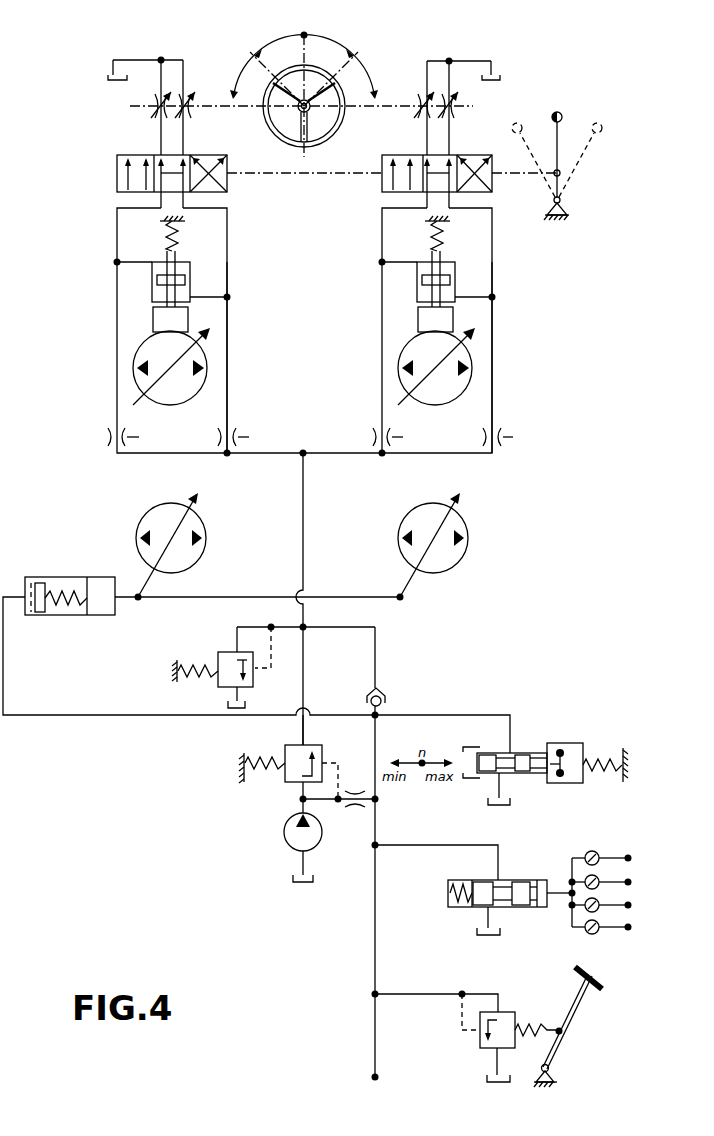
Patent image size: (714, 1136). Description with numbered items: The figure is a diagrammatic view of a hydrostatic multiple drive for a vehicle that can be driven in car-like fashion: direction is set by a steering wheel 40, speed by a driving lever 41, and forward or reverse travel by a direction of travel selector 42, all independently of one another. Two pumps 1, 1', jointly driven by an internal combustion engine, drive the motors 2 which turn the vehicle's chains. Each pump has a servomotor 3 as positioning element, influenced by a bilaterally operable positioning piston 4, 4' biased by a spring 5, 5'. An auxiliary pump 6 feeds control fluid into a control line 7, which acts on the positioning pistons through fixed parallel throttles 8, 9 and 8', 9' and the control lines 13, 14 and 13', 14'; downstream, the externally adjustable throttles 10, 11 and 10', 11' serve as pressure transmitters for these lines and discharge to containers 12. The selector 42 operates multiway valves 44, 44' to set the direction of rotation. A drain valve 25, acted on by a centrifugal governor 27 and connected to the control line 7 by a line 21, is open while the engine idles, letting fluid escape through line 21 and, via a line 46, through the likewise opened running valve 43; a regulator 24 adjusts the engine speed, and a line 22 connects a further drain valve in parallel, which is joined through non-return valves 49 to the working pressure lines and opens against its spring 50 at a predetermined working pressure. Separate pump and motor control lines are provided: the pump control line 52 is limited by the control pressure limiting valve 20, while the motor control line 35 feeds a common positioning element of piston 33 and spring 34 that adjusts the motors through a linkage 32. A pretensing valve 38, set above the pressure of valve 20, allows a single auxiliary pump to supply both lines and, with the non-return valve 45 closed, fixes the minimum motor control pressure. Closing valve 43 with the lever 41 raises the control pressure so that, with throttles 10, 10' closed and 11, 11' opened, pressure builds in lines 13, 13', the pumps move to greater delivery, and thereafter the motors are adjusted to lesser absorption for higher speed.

The pump 1 is at (137, 372).
The pump 1' is at (466, 366).
The motor 2 is at (152, 519).
The servomotor 3 is at (152, 323).
The positioning piston 4 is at (150, 282).
The positioning piston 4' is at (456, 279).
The spring 5 is at (126, 244).
The spring 5' is at (479, 240).
The auxiliary pump 6 is at (298, 838).
The control line 7 is at (303, 732).
The throttle 8 is at (131, 440).
The throttle 8' is at (398, 440).
The throttle 9 is at (241, 440).
The throttle 9' is at (508, 440).
The adjustable throttle 10 is at (204, 80).
The adjustable throttle 10' is at (389, 82).
The adjustable throttle 11 is at (210, 101).
The adjustable throttle 11' is at (432, 105).
The container 12 is at (306, 492).
The control line 13 is at (145, 330).
The control line 13' is at (412, 330).
The control line 14 is at (249, 357).
The control line 14' is at (516, 357).
The control pressure limiting valve 20 is at (222, 683).
The line 21 is at (440, 713).
The line 22 is at (417, 845).
The regulator 24 is at (577, 748).
The drain valve 25 is at (523, 753).
The centrifugal governor 27 is at (560, 748).
The linkage 32 is at (233, 597).
The piston 33 is at (37, 577).
The spring 34 is at (65, 590).
The motor control line 35 is at (70, 717).
The pretensing valve 38 is at (292, 772).
The steering wheel 40 is at (332, 82).
The driving lever 41 is at (567, 1025).
The direction of travel selector 42 is at (558, 111).
The running valve 43 is at (492, 1043).
The multiway valve 44 is at (143, 187).
The multiway valve 44' is at (460, 187).
The non-return valve 45 is at (383, 698).
The line 46 is at (420, 993).
The non-return valve 49 is at (595, 877).
The spring 50 is at (460, 908).
The pump control line 52 is at (305, 511).